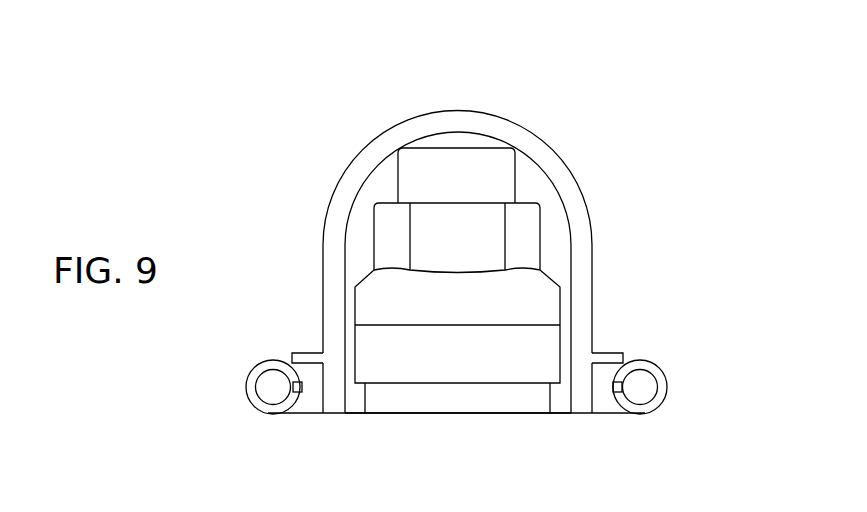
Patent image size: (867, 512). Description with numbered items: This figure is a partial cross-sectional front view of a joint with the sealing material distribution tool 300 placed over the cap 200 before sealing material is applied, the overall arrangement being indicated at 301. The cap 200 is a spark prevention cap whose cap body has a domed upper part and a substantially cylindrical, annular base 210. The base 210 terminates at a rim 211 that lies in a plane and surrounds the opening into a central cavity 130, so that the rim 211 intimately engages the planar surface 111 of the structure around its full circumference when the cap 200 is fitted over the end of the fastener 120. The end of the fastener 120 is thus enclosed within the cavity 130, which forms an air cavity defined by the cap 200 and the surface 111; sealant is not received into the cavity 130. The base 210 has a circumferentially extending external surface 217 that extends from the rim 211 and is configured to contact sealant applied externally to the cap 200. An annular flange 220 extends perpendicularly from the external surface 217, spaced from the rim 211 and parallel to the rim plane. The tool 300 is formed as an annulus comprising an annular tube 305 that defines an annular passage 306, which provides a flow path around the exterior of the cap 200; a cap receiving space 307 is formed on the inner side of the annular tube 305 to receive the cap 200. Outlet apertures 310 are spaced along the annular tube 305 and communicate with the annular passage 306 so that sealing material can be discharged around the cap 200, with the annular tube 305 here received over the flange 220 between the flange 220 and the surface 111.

The mounting assembly 301 is at (637, 72).
The cap 200 is at (543, 157).
The base 210 is at (330, 285).
The rim 211 is at (335, 412).
The planar surface 111 is at (603, 410).
The fastener 120 is at (525, 223).
The central cavity 130 is at (358, 223).
The external surface 217 is at (321, 386).
The flange 220 is at (296, 352).
The sealing material distribution tool 300 is at (647, 367).
The annular tube 305 is at (667, 380).
The annular passage 306 is at (273, 393).
The cap receiving space 307 is at (311, 400).
The outlet apertures 310 is at (596, 400).